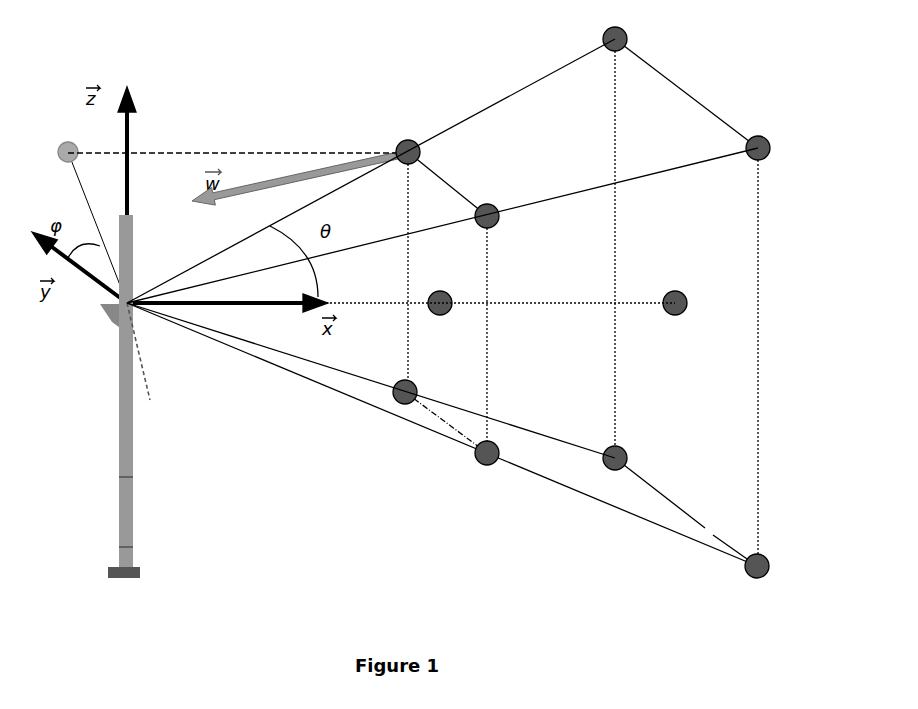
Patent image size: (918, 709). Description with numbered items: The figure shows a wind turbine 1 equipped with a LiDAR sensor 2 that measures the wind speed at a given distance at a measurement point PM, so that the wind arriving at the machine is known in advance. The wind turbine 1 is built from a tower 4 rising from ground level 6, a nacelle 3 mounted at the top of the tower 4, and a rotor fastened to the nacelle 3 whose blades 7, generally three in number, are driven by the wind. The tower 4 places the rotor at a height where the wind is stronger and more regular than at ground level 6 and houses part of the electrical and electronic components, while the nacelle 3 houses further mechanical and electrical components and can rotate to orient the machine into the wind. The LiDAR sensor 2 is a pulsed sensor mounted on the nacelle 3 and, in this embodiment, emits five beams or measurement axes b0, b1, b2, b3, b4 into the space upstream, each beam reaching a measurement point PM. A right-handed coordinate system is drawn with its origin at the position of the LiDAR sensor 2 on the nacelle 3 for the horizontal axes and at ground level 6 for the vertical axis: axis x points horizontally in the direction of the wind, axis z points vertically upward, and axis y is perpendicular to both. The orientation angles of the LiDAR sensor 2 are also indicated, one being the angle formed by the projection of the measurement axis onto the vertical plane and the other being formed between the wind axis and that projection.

The wind turbine 1 is at (162, 150).
The LiDAR sensor 2 is at (101, 304).
The nacelle 3 is at (118, 333).
The tower 4 is at (120, 468).
The ground level 6 is at (117, 571).
The blades 7 is at (150, 394).
The measurement axis b0 is at (551, 309).
The measurement axis b1 is at (451, 126).
The measurement axis b2 is at (694, 170).
The measurement axis b3 is at (578, 497).
The measurement axis b4 is at (344, 381).
The measurement point PM is at (480, 453).